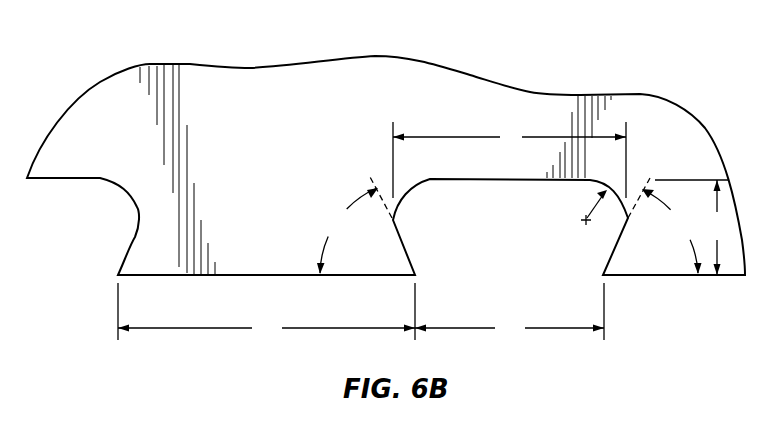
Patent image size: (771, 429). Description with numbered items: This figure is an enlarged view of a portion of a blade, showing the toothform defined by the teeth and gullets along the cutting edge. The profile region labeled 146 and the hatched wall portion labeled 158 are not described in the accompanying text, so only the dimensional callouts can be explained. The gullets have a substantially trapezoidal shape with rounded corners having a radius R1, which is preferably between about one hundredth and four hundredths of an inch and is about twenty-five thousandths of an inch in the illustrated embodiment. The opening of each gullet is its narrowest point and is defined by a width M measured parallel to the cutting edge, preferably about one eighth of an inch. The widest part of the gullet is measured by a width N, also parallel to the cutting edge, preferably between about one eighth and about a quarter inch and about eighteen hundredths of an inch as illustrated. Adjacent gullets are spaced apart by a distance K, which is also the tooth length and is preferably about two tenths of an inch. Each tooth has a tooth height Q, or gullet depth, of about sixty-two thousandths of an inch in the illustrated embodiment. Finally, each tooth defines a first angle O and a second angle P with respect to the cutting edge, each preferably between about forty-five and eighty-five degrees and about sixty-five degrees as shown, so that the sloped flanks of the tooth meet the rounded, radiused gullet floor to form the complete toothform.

The seal profile 146 is at (570, 60).
The hatched wall portion 158 is at (253, 103).
The width N is at (509, 160).
The distance K is at (266, 311).
The width M is at (509, 311).
The tooth height Q is at (691, 227).
The first angle O is at (665, 226).
The second angle P is at (354, 224).
The radius R1 is at (591, 207).